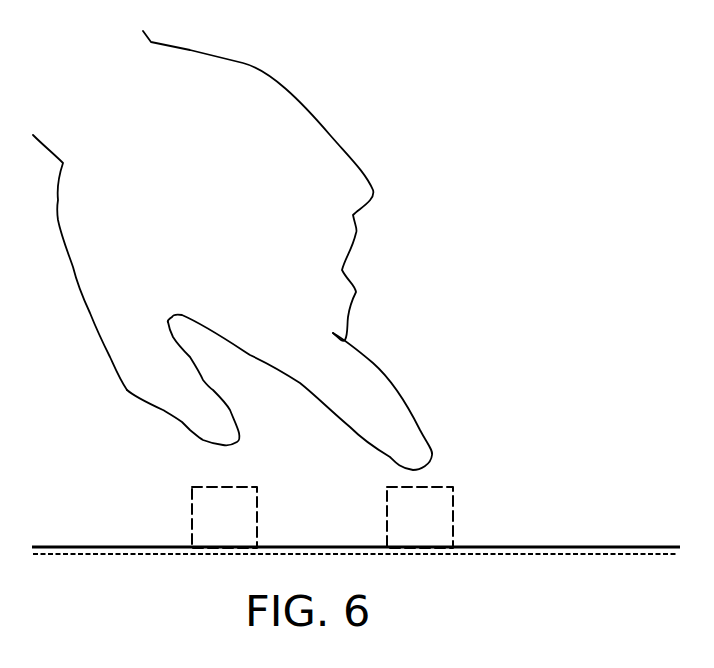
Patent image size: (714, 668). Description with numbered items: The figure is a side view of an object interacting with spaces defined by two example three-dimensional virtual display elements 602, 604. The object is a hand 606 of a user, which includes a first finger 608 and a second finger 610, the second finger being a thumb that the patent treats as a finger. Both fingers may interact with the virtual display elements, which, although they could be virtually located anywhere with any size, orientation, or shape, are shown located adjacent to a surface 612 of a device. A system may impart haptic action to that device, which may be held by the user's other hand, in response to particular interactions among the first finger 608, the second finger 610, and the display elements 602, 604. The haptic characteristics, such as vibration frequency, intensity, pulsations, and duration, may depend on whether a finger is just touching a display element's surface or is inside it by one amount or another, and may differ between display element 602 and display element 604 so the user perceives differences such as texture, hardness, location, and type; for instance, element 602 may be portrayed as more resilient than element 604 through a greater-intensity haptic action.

The virtual display element 602 is at (439, 526).
The virtual display element 604 is at (246, 526).
The hand 606 is at (229, 184).
The first finger 608 is at (386, 410).
The second finger 610 is at (177, 381).
The surface 612 is at (532, 547).